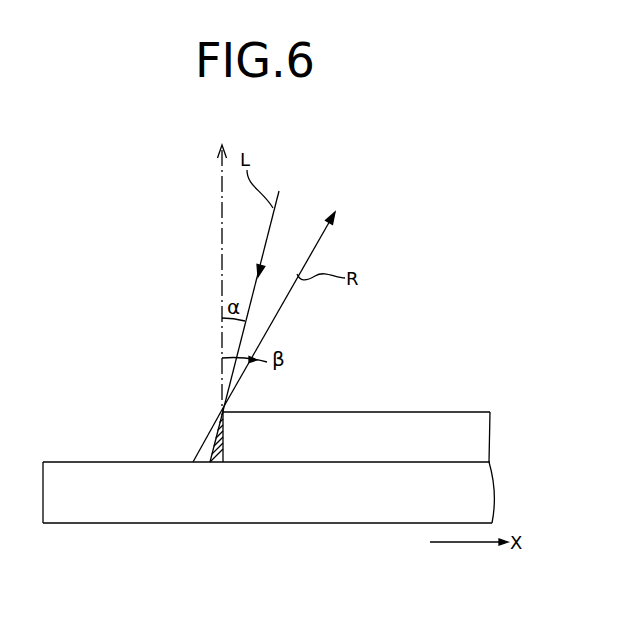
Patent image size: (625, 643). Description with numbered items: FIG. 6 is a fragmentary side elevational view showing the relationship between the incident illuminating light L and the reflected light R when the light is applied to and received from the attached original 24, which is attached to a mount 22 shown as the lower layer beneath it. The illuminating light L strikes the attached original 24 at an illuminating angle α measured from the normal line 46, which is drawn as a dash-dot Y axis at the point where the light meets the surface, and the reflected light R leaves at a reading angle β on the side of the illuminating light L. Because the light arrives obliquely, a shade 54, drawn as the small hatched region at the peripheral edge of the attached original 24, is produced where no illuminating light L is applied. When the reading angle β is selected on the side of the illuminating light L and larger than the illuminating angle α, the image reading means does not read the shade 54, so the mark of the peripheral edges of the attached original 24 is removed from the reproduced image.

The substrate 22 is at (198, 510).
The attached original 24 is at (427, 423).
The normal line (Y axis) 46 is at (220, 265).
The shade 54 is at (222, 445).